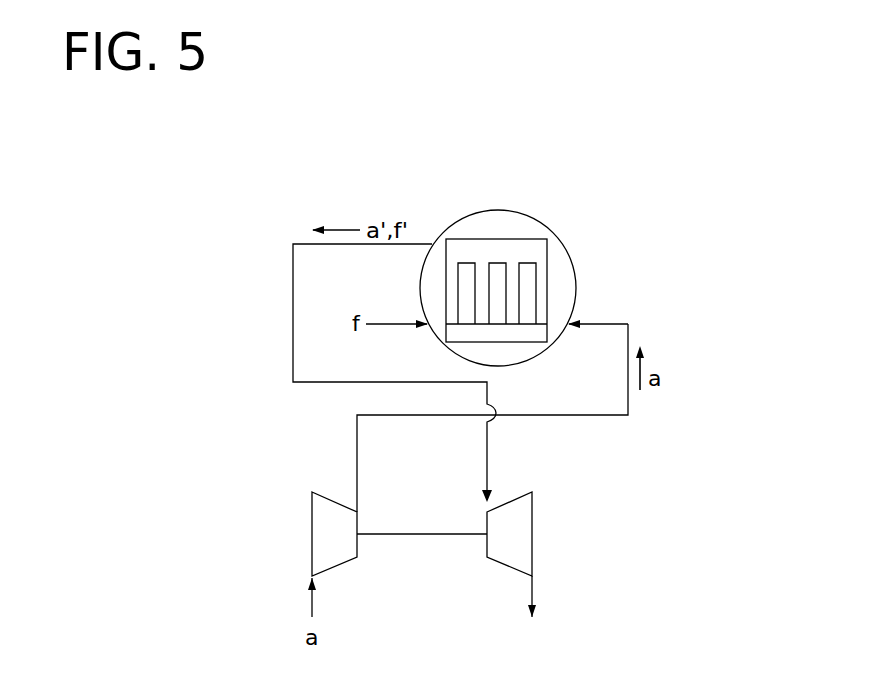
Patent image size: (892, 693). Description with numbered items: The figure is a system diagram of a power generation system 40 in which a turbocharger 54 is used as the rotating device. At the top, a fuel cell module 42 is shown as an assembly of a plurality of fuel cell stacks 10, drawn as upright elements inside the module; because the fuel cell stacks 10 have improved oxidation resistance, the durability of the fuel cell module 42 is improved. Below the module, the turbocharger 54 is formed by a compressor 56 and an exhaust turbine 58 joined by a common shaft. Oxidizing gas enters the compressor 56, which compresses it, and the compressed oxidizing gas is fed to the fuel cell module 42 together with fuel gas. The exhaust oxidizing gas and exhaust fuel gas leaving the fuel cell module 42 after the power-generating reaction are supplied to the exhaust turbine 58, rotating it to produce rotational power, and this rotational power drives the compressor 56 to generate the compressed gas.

The power generation system 40 is at (498, 234).
The fuel cell module 42 is at (513, 211).
The fuel cell stack 10 is at (526, 262).
The turbocharger 54 is at (385, 542).
The compressor 56 is at (312, 526).
The exhaust turbine 58 is at (513, 573).